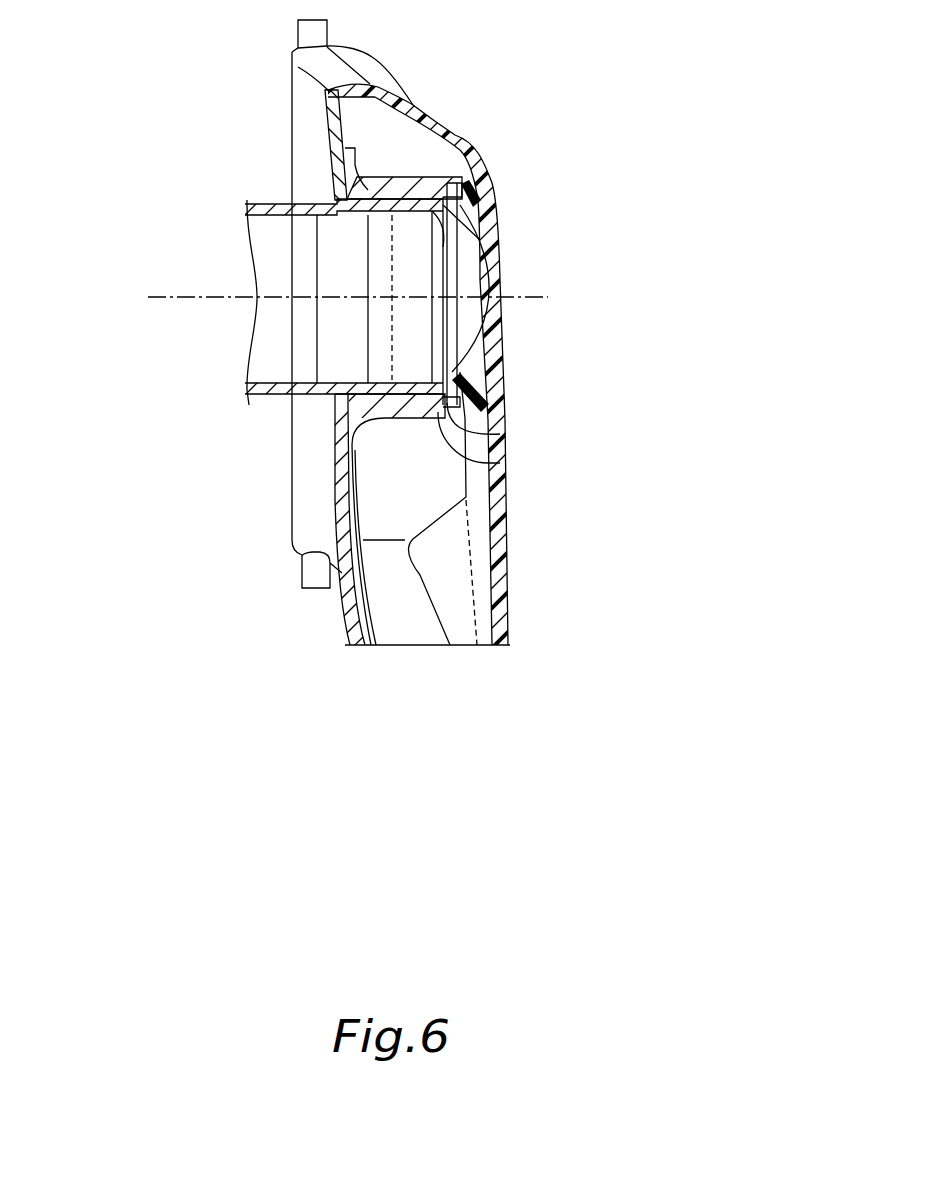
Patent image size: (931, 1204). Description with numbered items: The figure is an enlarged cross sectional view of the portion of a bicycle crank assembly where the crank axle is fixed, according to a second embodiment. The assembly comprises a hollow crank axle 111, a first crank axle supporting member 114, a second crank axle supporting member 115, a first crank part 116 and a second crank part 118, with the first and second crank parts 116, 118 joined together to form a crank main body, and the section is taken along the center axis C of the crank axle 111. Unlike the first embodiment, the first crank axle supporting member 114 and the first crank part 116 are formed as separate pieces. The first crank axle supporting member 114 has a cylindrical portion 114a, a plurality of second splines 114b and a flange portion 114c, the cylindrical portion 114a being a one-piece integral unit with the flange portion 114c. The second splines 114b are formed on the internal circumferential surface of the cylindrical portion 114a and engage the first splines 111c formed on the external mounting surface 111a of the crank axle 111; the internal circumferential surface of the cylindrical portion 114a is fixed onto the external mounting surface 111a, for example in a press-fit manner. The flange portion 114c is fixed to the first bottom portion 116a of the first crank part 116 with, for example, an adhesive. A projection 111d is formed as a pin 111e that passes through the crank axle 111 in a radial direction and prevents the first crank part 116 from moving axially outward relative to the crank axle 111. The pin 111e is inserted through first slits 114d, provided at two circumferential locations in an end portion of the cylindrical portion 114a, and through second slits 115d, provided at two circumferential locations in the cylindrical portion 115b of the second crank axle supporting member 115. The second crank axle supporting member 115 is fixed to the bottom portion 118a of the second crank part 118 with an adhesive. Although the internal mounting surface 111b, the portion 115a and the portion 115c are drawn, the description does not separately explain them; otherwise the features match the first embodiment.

The hollow crank axle 111 is at (250, 185).
The external mounting surface 111a is at (398, 197).
The housing side wall 111b is at (498, 245).
The first splines 111c is at (465, 151).
The projection 111d is at (490, 168).
The pin 111e is at (502, 453).
The first crank axle supporting member 114 is at (294, 112).
The cylindrical portion 114a is at (348, 478).
The second splines 114b is at (376, 157).
The flange portion 114c is at (356, 450).
The first slits 114d is at (493, 198).
The second crank axle supporting member 115 is at (495, 215).
The lower hook portion of retaining ring 115a is at (502, 382).
The cylindrical portion 115b is at (500, 427).
The spring portion 115c is at (499, 285).
The second slits 115d is at (502, 465).
The first crank part 116 is at (320, 616).
The first bottom portion 116a is at (350, 633).
The second crank part 118 is at (523, 581).
The bottom portion 118a is at (497, 327).
The center axis C is at (217, 297).